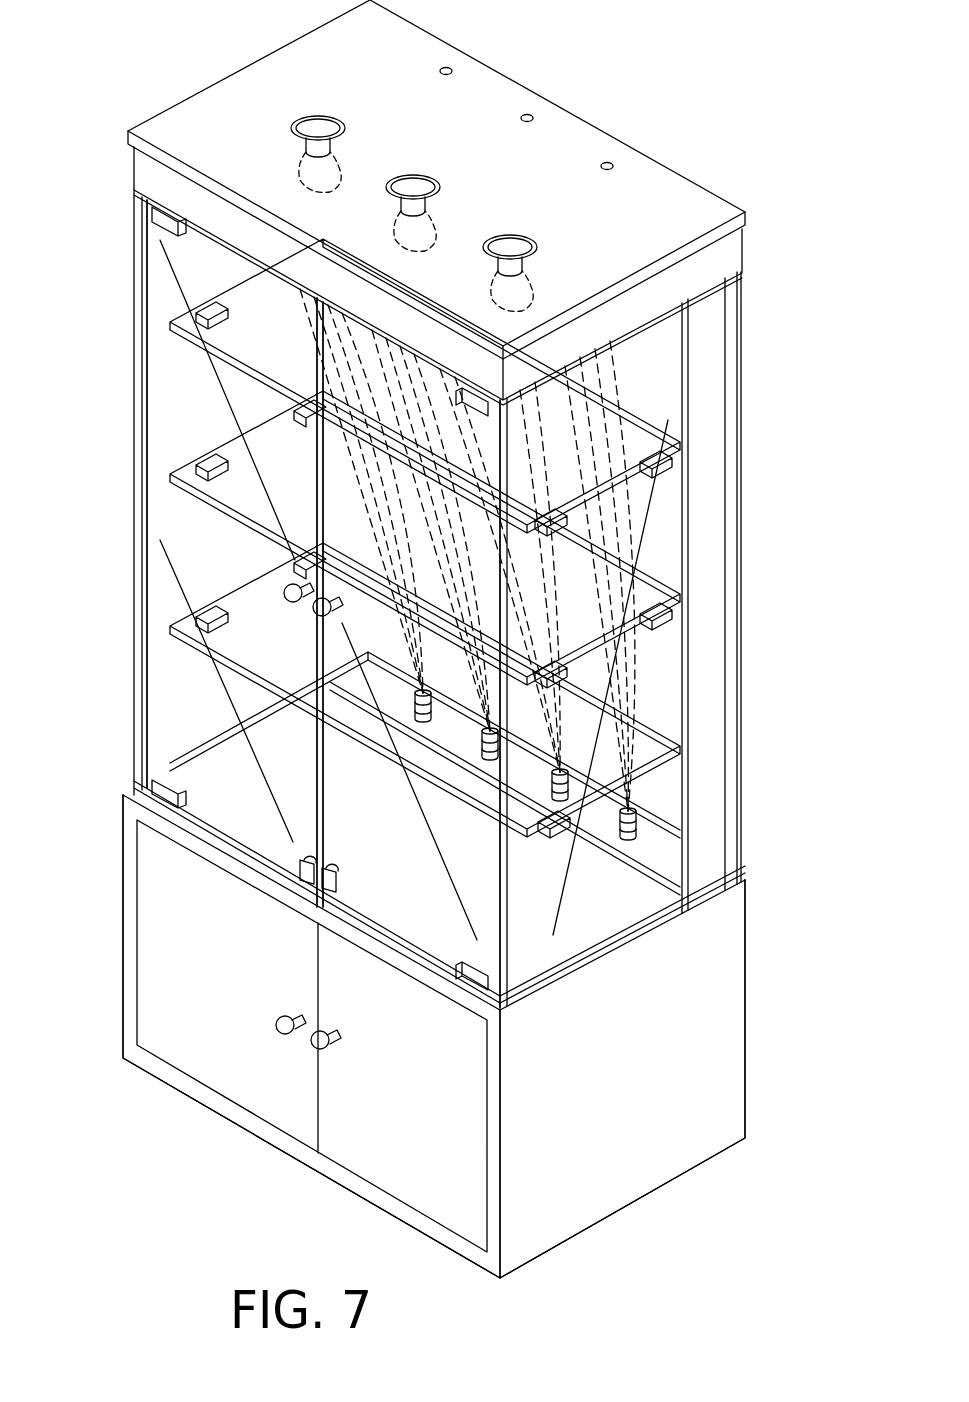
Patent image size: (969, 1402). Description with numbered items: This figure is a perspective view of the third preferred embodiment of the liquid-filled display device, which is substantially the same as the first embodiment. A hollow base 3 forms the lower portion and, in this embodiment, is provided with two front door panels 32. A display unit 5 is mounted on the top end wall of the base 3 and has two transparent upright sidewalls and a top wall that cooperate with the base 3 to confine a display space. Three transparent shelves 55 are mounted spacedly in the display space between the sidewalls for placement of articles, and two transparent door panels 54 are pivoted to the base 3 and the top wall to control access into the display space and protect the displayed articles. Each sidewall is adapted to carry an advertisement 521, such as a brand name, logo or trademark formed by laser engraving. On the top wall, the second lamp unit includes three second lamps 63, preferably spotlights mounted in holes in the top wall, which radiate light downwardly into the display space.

The display unit 5 is at (115, 543).
The second lamp 63 is at (340, 165).
The advertisement 521 is at (730, 318).
The transparent shelf 55 is at (638, 472).
The transparent door panel 54 is at (163, 712).
The hollow base 3 is at (755, 1034).
The front door panel 32 is at (228, 1080).